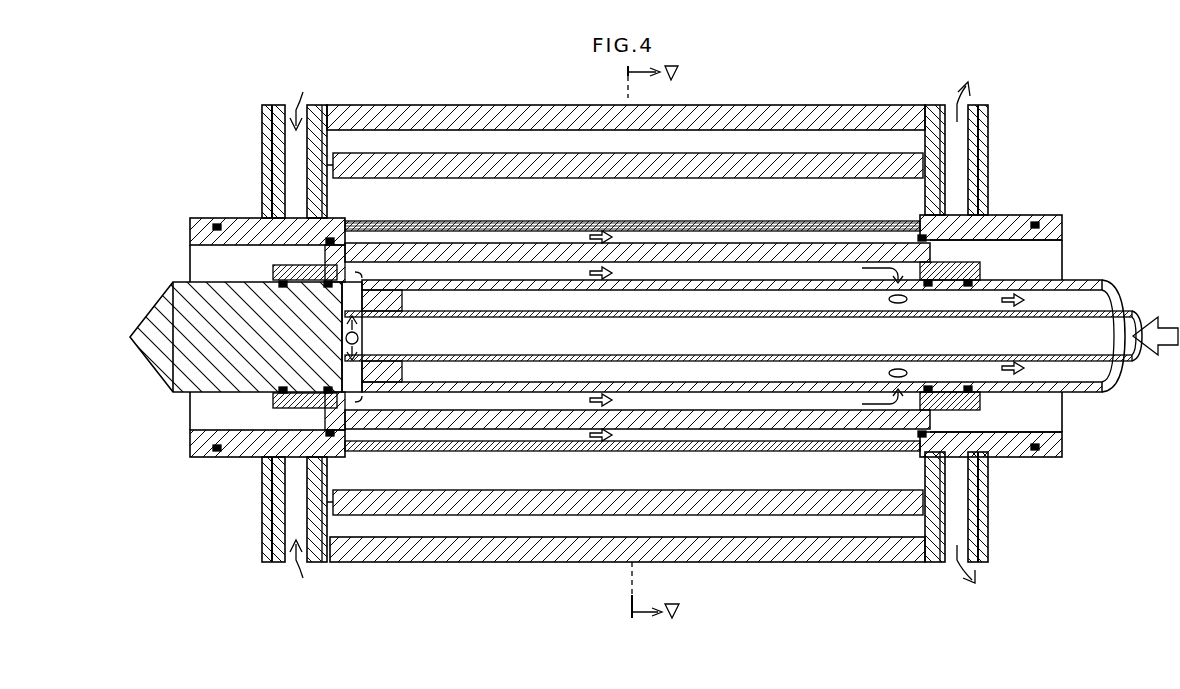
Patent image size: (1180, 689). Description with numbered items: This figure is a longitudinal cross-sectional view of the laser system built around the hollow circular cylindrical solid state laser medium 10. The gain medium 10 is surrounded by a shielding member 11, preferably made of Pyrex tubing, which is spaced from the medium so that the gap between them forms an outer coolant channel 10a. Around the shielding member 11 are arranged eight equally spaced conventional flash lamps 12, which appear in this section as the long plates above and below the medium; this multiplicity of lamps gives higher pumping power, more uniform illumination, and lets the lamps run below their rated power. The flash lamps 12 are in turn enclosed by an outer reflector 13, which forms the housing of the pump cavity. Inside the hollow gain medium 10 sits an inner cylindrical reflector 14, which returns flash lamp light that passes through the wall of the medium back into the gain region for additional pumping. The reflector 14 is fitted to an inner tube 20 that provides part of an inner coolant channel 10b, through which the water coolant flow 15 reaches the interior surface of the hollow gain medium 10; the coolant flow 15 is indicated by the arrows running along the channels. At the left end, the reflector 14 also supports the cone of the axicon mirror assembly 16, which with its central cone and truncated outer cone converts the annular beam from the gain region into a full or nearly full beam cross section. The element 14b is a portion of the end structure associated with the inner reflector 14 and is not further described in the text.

The hollow cylindrical solid state laser medium 10 is at (802, 221).
The outer coolant channel 10a is at (636, 221).
The inner coolant channel 10b is at (692, 221).
The shielding member 11 is at (747, 221).
The flash lamps 12 is at (803, 152).
The outer reflector 13 is at (698, 106).
The inner cylindrical reflector 14 is at (752, 290).
The end flange 14b is at (190, 292).
The water coolant flow 15 is at (598, 282).
The axicon mirror assembly 16 is at (160, 320).
The inner tube 20 is at (1068, 302).